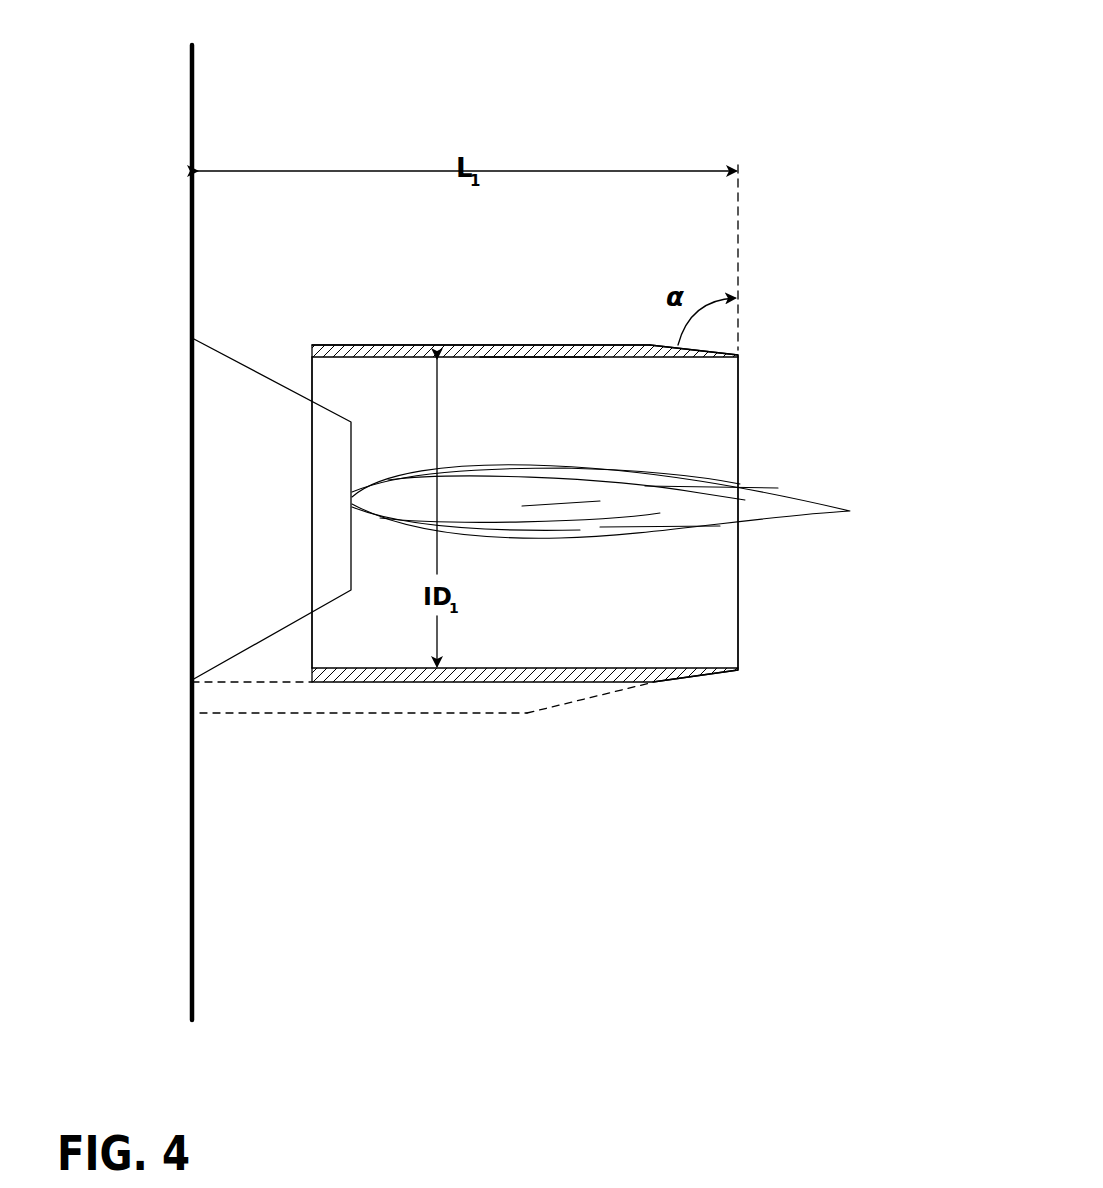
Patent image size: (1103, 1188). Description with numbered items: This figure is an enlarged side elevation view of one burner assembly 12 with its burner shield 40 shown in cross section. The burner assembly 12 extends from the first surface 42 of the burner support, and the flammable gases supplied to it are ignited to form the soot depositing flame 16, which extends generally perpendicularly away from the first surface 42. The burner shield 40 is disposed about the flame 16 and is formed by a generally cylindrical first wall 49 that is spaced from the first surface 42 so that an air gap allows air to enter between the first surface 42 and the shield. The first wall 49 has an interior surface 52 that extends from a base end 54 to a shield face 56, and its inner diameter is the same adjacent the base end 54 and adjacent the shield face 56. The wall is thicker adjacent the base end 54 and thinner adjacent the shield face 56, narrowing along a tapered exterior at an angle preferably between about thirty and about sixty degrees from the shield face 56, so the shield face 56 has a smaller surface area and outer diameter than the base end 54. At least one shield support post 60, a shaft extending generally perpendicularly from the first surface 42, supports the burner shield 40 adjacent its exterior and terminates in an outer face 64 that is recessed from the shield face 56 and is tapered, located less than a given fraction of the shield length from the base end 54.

The burner assembly 12 is at (667, 115).
The flame 16 is at (780, 503).
The burner shield 40 is at (455, 338).
The first surface 42 is at (195, 145).
The first wall 49 is at (392, 345).
The interior surface 52 is at (540, 362).
The base end 54 is at (312, 350).
The shield face 56 is at (740, 358).
The shield support post 60 is at (395, 713).
The outer face 64 is at (596, 698).